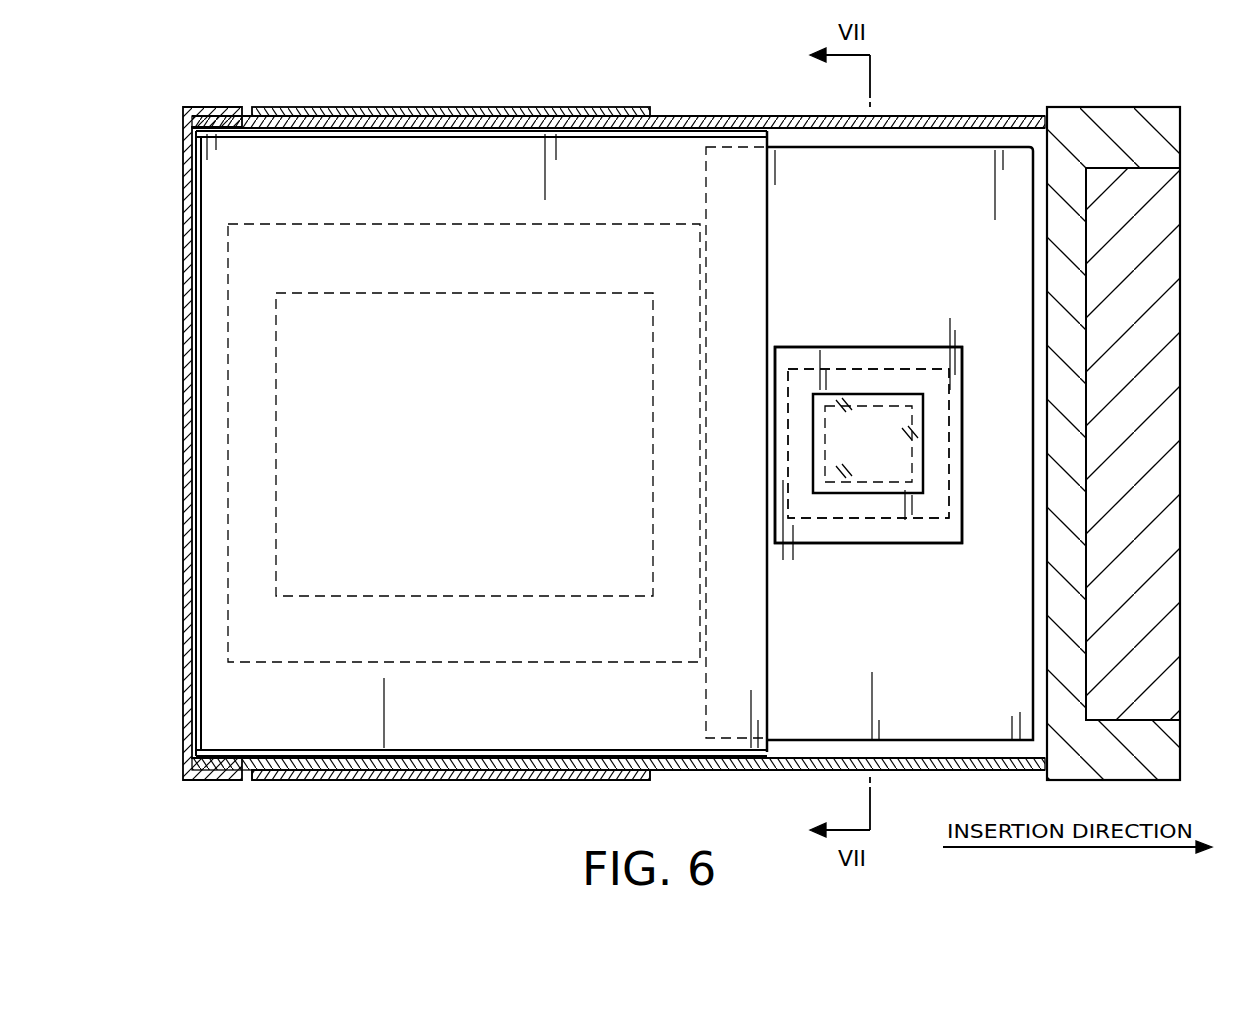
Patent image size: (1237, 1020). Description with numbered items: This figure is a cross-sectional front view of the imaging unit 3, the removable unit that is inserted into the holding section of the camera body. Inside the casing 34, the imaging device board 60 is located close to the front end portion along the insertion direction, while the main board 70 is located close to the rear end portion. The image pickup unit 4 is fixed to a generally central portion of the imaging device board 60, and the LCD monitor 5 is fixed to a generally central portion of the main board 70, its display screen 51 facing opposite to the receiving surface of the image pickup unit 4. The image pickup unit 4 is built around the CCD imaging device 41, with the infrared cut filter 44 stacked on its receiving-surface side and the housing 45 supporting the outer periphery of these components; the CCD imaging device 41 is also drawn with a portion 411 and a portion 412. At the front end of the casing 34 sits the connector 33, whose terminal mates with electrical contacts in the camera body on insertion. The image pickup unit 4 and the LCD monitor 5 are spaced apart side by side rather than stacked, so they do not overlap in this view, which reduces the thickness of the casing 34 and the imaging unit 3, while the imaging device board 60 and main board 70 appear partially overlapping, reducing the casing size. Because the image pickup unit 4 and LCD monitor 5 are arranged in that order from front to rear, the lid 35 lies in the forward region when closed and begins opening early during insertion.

The imaging unit 3 is at (751, 46).
The image pickup unit 4 is at (917, 341).
The LCD monitor 5 is at (331, 218).
The connector 33 is at (1170, 447).
The casing 34 is at (213, 102).
The lid 35 is at (424, 107).
The CCD imaging device 41 is at (826, 526).
The infrared cut filter 44 is at (873, 413).
The housing 45 is at (960, 448).
The display screen 51 is at (512, 598).
The imaging device board 60 is at (940, 160).
The main board 70 is at (628, 158).
The light receiving portion 411 is at (900, 494).
The electrode portion 412 is at (806, 366).